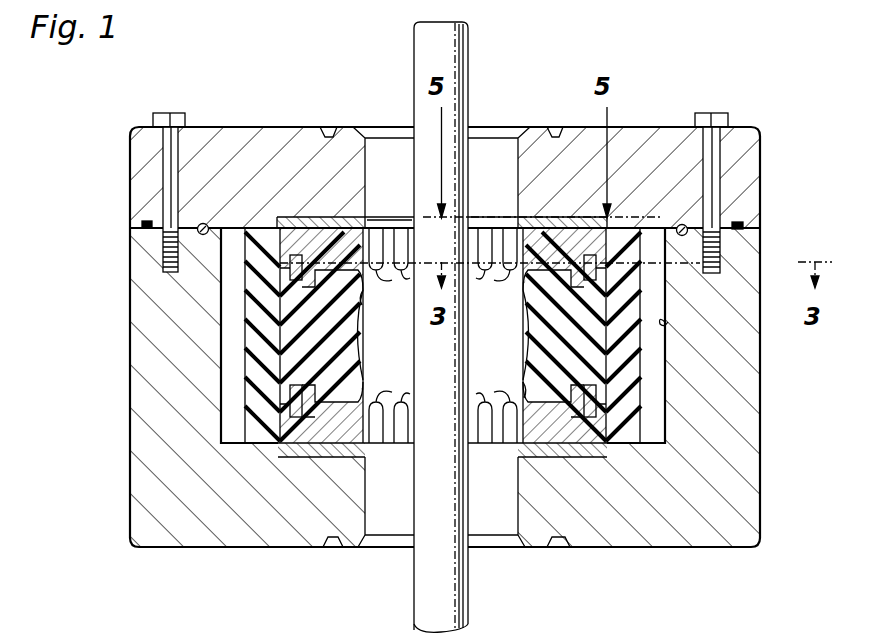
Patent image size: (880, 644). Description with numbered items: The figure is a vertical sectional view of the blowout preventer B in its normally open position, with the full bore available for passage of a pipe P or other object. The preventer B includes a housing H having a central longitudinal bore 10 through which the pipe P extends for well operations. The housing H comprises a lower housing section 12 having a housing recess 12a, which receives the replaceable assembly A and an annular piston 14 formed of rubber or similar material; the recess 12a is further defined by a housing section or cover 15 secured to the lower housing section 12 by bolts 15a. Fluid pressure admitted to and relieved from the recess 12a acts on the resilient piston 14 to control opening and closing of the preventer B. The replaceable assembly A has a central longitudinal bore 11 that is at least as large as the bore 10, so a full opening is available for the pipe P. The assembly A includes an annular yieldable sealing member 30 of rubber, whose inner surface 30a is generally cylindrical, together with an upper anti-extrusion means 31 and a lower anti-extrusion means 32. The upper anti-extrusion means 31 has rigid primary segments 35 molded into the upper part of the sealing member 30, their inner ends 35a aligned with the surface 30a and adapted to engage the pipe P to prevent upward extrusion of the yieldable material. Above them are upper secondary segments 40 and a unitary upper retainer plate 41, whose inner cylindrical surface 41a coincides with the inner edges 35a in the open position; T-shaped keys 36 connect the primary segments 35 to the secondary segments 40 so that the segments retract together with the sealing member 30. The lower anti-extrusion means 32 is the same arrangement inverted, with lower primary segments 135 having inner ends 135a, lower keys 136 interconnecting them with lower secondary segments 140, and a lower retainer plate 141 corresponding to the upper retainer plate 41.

The pipe P is at (413, 47).
The central longitudinal bore 10 is at (493, 157).
The central longitudinal bore 11 is at (441, 363).
The lower housing section 12 is at (762, 354).
The housing recess 12a is at (668, 326).
The annular piston 14 is at (660, 350).
The housing section or cover 15 is at (762, 212).
The bolts 15a is at (165, 172).
The annular yieldable sealing element 30 is at (555, 322).
The inner surface 30a is at (540, 338).
The upper anti-extrusion means 31 is at (518, 270).
The lower anti-extrusion means 32 is at (388, 410).
The primary segments 35 is at (368, 300).
The inner ends of primary segments 35a is at (382, 275).
The keys 36 is at (296, 268).
The upper secondary segments 40 is at (308, 215).
The upper retainer plate 41 is at (289, 217).
The inner cylindrical surface 41a is at (380, 217).
The lower primary segments 135 is at (362, 380).
The inner ends of lower primary segments 135a is at (490, 395).
The lower keys 136 is at (296, 400).
The lower secondary segments 140 is at (300, 418).
The lower retainer plate 141 is at (300, 452).
The replaceable assembly A is at (618, 218).
The blowout preventer B is at (764, 185).
The housing H is at (745, 387).